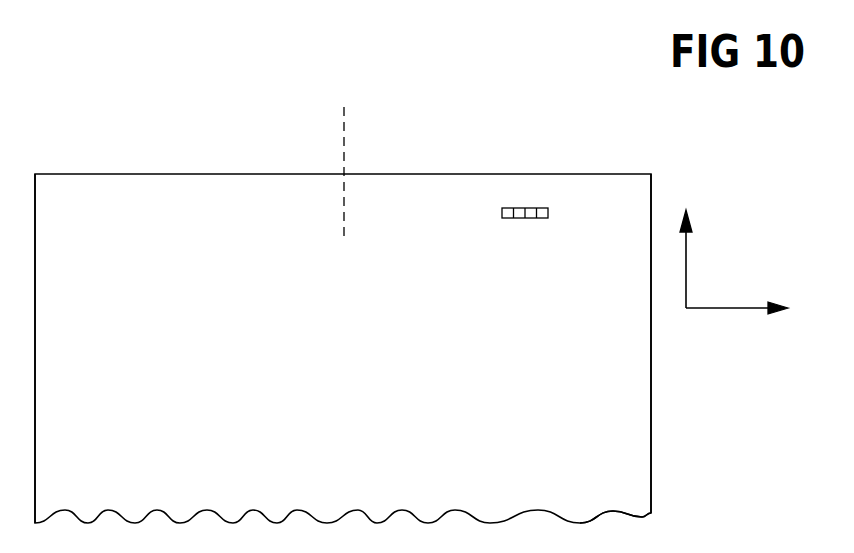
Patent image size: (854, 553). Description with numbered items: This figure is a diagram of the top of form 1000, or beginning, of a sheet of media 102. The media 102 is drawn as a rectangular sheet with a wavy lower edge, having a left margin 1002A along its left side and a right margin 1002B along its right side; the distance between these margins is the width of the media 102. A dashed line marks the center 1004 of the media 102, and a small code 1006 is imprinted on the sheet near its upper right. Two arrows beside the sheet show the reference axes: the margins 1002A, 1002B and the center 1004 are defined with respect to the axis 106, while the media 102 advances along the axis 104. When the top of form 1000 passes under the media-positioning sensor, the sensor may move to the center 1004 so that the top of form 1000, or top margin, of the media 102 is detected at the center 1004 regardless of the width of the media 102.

The top of form 1000 is at (90, 174).
The sheet of media 102 is at (644, 488).
The center 1004 is at (342, 130).
The code 1006 is at (523, 218).
The left margin 1002A is at (35, 358).
The right margin 1002B is at (650, 370).
The axis 104 is at (686, 253).
The axis 106 is at (753, 310).